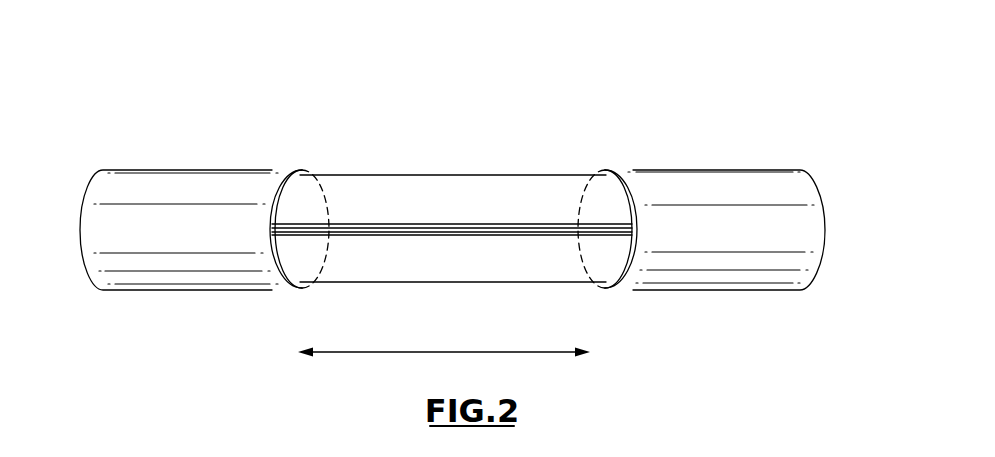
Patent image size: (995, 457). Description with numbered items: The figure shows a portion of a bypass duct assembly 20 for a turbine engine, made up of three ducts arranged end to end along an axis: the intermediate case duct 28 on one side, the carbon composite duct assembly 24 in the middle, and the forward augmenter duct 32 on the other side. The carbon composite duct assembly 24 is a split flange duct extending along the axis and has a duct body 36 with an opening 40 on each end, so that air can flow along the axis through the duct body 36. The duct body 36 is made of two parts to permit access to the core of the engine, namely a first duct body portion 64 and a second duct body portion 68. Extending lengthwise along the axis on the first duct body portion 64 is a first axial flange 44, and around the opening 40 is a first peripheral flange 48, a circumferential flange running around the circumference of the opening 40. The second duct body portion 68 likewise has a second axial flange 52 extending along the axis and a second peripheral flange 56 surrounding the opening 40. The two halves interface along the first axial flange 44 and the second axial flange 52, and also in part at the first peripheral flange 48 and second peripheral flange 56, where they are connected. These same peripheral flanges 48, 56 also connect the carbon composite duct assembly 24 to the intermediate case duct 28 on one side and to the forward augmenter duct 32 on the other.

The bypass duct assembly 20 is at (506, 90).
The carbon composite duct assembly 24 is at (522, 175).
The intermediate case duct 28 is at (193, 187).
The forward augmenter duct 32 is at (743, 178).
The duct body 36 is at (416, 184).
The opening 40 is at (304, 200).
The first axial flange 44 is at (338, 224).
The first peripheral flange 48 is at (300, 169).
The second axial flange 52 is at (360, 234).
The second peripheral flange 56 is at (299, 289).
The first duct body portion 64 is at (519, 210).
The second duct body portion 68 is at (519, 270).